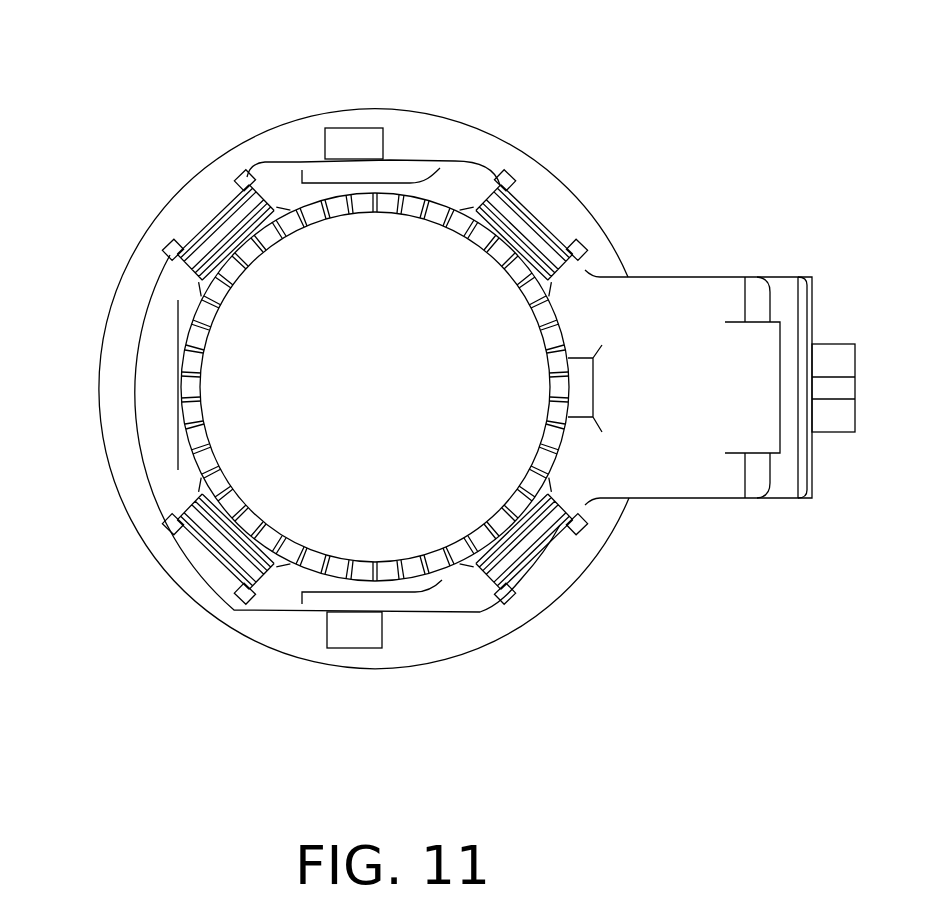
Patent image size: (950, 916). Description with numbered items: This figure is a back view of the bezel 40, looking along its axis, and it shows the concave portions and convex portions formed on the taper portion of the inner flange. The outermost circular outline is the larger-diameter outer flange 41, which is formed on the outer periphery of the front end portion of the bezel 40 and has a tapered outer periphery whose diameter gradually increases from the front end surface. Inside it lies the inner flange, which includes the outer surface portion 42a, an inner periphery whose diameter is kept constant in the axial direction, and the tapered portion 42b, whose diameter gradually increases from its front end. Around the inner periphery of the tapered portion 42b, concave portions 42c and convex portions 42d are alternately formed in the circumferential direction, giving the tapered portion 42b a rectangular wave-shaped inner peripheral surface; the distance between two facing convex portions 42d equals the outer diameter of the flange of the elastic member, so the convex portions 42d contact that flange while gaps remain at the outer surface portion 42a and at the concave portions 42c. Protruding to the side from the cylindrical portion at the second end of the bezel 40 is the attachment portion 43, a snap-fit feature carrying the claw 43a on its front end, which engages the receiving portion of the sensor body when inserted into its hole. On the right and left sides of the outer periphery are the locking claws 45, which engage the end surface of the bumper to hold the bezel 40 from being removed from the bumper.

The bezel 40 is at (117, 680).
The outer flange 41 is at (178, 195).
The outer surface portion 42a is at (243, 378).
The tapered portion 42b is at (459, 352).
The concave portions 42c is at (492, 182).
The convex portions 42d is at (552, 540).
The attachment portion 43 is at (689, 277).
The claw 43a is at (833, 436).
The locking claws 45 is at (353, 128).